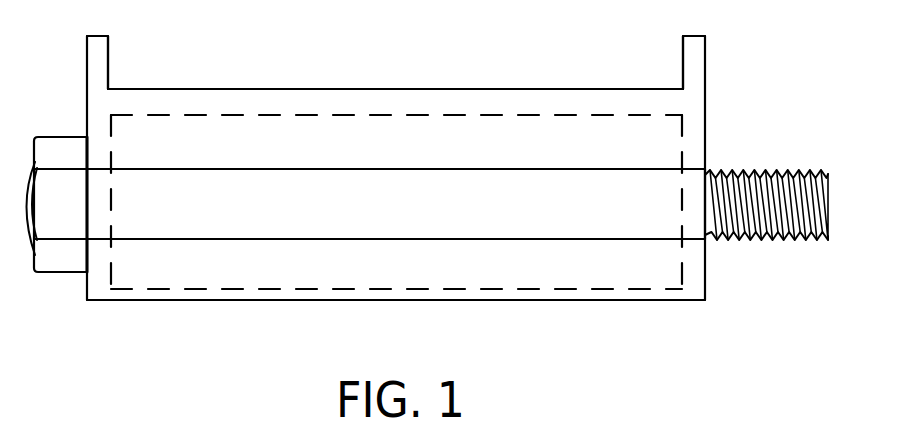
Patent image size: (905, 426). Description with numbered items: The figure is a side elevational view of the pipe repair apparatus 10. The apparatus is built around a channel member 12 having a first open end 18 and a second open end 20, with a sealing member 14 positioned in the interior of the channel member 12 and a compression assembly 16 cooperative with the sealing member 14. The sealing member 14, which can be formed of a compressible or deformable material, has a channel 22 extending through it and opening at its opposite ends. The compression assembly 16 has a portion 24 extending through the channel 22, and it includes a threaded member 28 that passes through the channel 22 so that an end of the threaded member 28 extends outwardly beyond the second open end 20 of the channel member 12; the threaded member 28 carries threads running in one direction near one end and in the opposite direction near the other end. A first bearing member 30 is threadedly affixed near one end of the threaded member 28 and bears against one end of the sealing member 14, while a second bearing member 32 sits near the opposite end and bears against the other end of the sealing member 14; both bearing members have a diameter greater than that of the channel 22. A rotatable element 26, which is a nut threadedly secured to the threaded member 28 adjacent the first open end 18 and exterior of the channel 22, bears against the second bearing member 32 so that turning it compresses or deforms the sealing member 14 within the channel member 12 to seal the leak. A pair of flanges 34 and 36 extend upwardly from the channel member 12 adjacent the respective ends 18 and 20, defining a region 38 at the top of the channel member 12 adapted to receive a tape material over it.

The pipe repair apparatus 10 is at (739, 82).
The channel member 12 is at (697, 137).
The sealing member 14 is at (645, 275).
The compression assembly 16 is at (737, 247).
The first open end 18 is at (85, 137).
The second open end 20 is at (705, 153).
The channel 22 is at (455, 168).
The portion 24 is at (298, 190).
The rotatable element 26 is at (57, 258).
The threaded member 28 is at (793, 238).
The first bearing member 30 is at (697, 275).
The second bearing member 32 is at (107, 282).
The flange 34 is at (102, 65).
The flange 36 is at (683, 63).
The region 38 is at (408, 90).